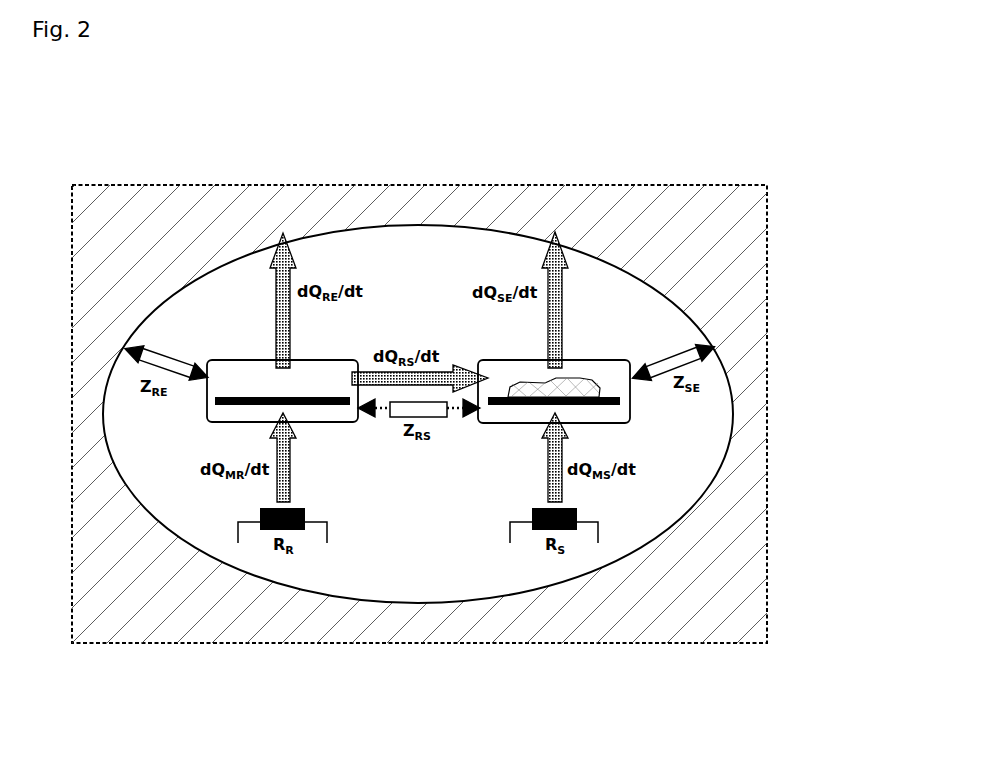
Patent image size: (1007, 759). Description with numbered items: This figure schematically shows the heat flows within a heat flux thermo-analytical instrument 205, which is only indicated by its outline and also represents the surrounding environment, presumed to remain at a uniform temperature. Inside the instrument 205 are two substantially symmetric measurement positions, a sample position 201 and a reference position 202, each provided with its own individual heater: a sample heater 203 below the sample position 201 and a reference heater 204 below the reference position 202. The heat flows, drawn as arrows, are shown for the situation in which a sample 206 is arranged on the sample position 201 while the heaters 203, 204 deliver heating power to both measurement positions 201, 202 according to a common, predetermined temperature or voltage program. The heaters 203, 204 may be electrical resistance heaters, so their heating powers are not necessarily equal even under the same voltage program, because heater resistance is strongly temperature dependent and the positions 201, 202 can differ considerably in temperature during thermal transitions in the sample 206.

The sample position 201 is at (654, 274).
The reference position 202 is at (235, 360).
The sample heater 203 is at (568, 530).
The reference heater 204 is at (265, 530).
The thermo-analytical instrument 205 is at (387, 185).
The sample 206 is at (627, 402).